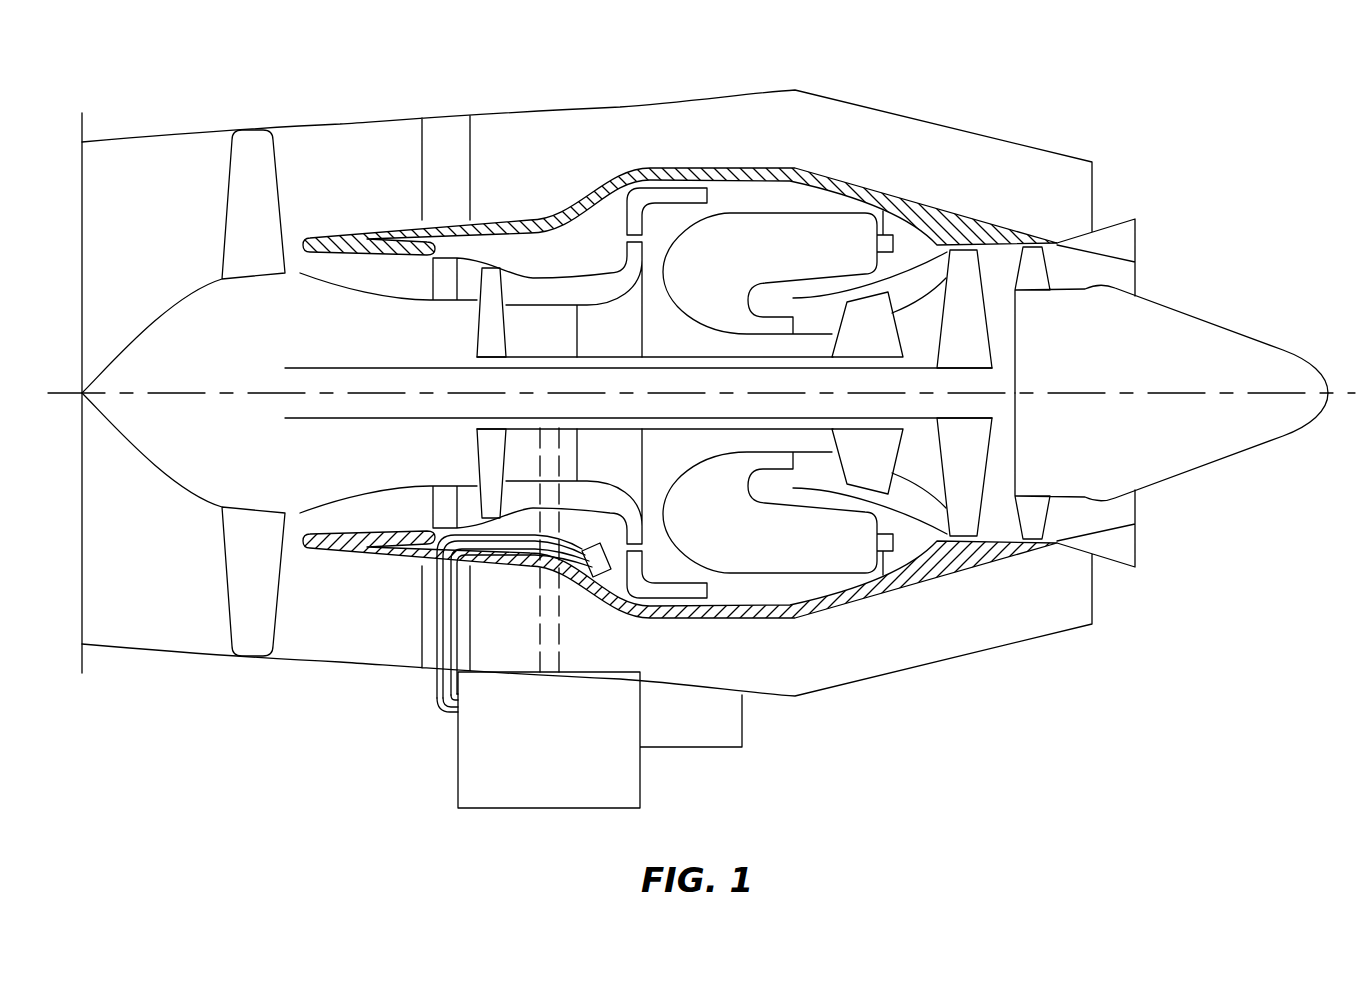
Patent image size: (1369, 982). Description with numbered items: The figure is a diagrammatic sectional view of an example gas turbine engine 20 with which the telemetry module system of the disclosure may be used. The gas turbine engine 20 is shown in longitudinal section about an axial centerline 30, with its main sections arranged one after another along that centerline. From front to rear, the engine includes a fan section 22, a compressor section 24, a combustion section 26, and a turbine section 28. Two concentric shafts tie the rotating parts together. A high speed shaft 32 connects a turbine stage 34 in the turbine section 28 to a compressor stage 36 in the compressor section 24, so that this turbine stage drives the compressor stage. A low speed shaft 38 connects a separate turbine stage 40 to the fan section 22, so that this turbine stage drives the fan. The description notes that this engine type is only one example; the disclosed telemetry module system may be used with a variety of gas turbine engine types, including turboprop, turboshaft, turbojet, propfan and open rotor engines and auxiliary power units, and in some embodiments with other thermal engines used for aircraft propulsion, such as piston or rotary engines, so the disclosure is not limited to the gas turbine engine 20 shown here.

The gas turbine engine 20 is at (1122, 112).
The fan section 22 is at (243, 560).
The compressor section 24 is at (533, 281).
The combustion section 26 is at (764, 230).
The turbine section 28 is at (918, 473).
The axial centerline 30 is at (408, 728).
The high speed shaft 32 is at (747, 428).
The turbine stage 34 is at (873, 468).
The compressor stage 36 is at (489, 453).
The low speed shaft 38 is at (413, 367).
The turbine stage 40 is at (968, 262).